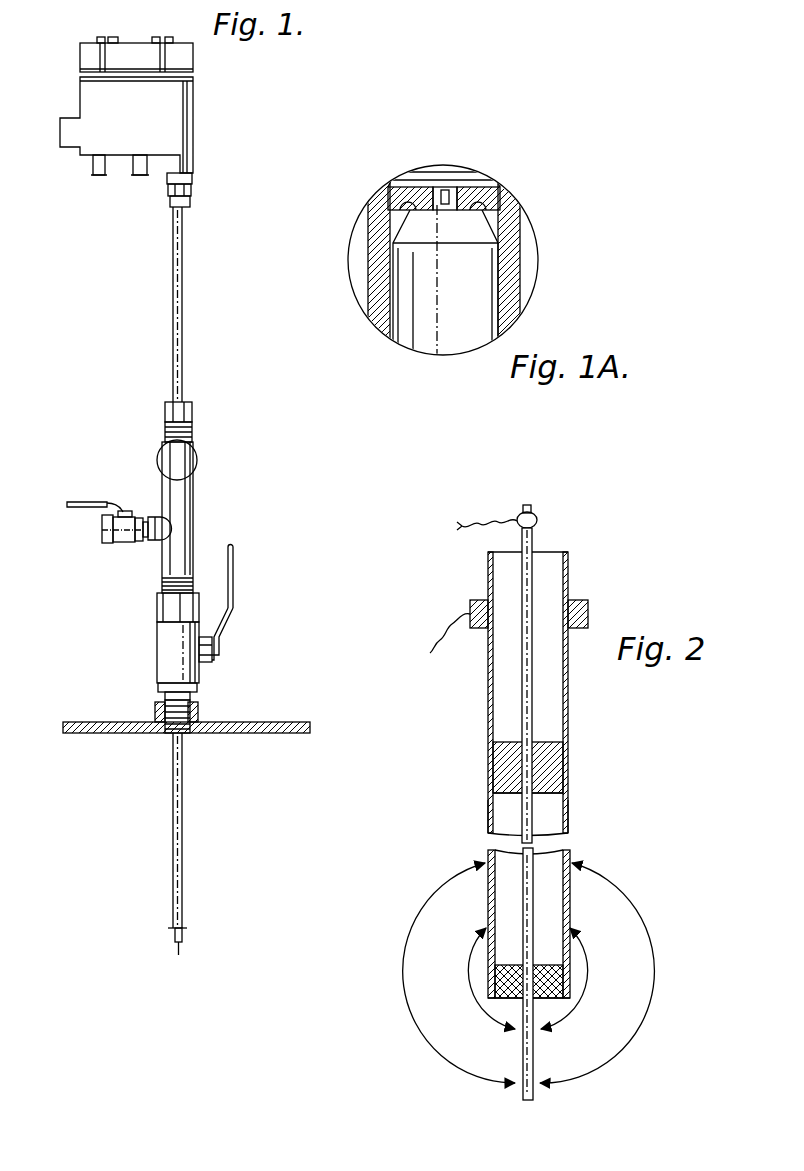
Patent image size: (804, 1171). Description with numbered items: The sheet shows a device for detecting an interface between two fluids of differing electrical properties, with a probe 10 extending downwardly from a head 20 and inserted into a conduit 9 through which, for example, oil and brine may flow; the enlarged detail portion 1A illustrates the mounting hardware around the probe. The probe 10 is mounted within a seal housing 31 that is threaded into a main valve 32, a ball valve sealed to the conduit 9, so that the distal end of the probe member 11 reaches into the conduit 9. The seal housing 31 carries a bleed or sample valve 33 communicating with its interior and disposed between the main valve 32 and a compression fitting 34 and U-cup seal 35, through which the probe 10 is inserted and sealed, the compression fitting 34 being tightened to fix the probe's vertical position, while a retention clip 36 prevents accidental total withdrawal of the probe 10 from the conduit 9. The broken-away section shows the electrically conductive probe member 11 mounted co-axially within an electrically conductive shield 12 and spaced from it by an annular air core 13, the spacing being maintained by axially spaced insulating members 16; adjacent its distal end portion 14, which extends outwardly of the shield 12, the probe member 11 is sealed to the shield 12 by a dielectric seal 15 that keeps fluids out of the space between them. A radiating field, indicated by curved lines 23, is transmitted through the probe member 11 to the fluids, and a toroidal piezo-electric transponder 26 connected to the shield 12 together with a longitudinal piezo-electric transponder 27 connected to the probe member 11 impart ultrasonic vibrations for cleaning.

In FIG. 1, the conduit 9 is at (258, 722).
In FIG. 1, the probe 10 is at (200, 325).
In FIG. 2, the probe 10 is at (589, 829).
In FIG. 1, the probe member 11 is at (183, 938).
In FIG. 2, the probe member 11 is at (530, 816).
In FIG. 2, the shield 12 is at (487, 821).
In FIG. 2, the annular air core 13 is at (503, 808).
In FIG. 2, the distal end portion 14 is at (525, 1058).
In FIG. 2, the dielectric seal 15 is at (552, 982).
In FIG. 2, the insulating members 16 is at (556, 763).
In FIG. 1, the head 20 is at (180, 115).
In FIG. 2, the curved lines 23 is at (470, 992).
In FIG. 2, the toroidal piezo-electric transponder 26 is at (586, 600).
In FIG. 2, the longitudinal piezo-electric transponder 27 is at (486, 522).
In FIG. 1, the seal housing 31 is at (167, 562).
In FIG. 1, the main valve 32 is at (167, 655).
In FIG. 1, the bleed or sample valve 33 is at (118, 543).
In FIG. 1, the compression fitting 34 is at (166, 426).
In FIG. 1A, the U-cup seal 35 is at (472, 302).
In FIG. 1, the retention clip 36 is at (163, 932).
In FIG. 1, the detail portion 1A is at (198, 458).